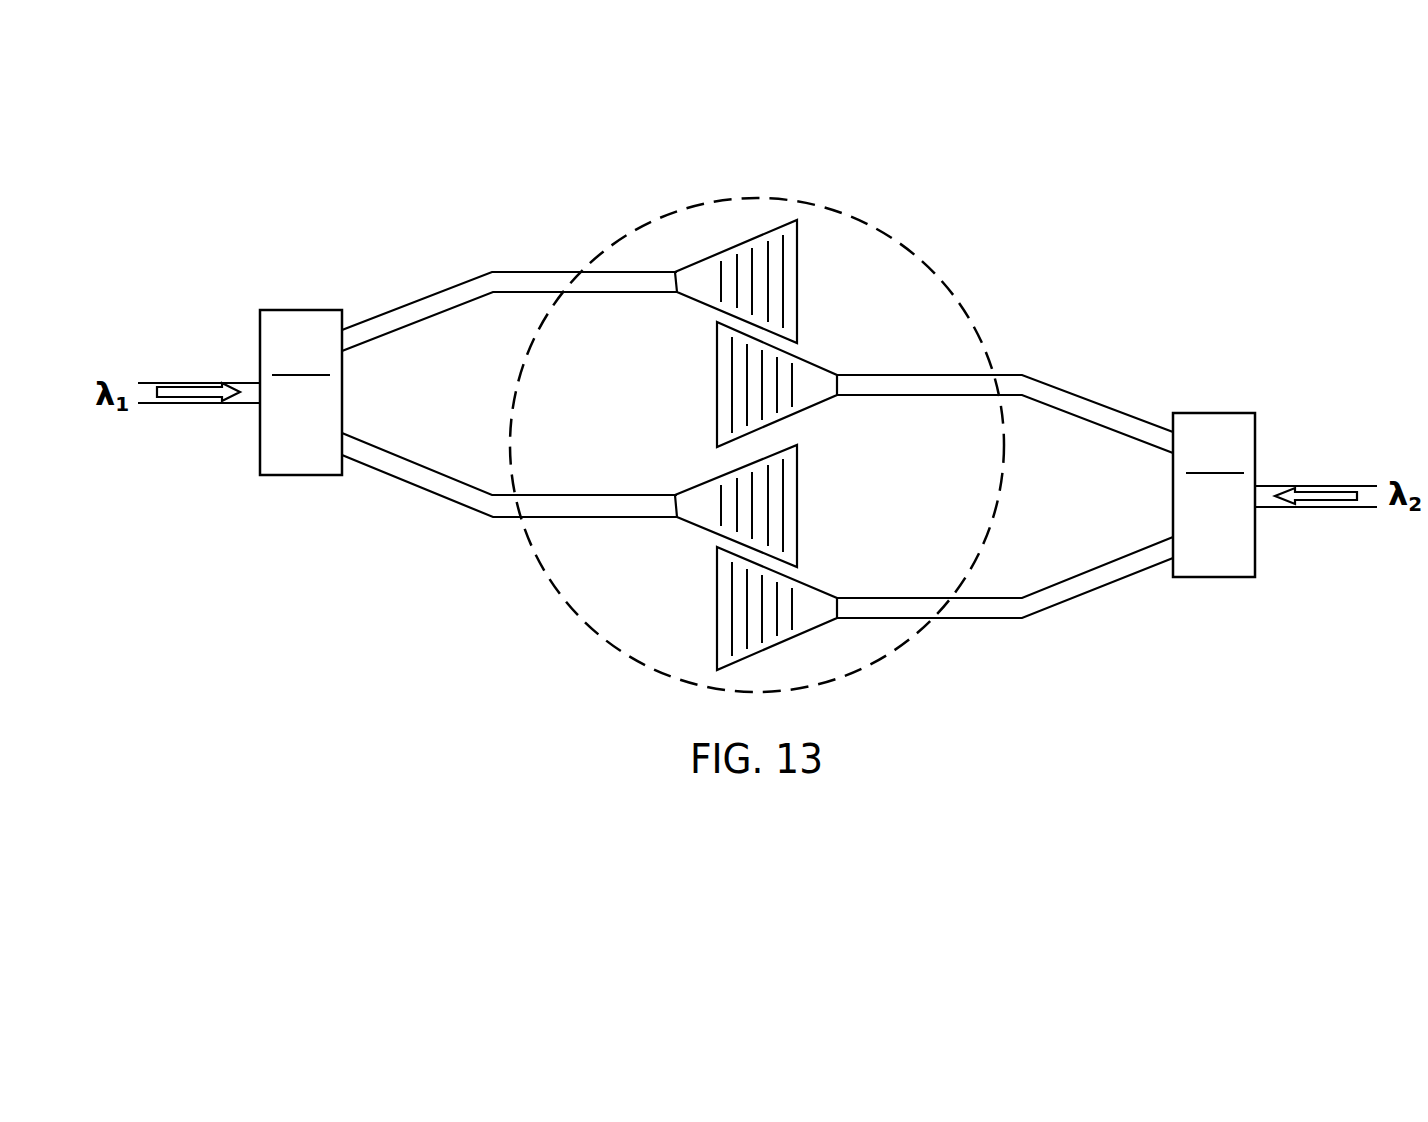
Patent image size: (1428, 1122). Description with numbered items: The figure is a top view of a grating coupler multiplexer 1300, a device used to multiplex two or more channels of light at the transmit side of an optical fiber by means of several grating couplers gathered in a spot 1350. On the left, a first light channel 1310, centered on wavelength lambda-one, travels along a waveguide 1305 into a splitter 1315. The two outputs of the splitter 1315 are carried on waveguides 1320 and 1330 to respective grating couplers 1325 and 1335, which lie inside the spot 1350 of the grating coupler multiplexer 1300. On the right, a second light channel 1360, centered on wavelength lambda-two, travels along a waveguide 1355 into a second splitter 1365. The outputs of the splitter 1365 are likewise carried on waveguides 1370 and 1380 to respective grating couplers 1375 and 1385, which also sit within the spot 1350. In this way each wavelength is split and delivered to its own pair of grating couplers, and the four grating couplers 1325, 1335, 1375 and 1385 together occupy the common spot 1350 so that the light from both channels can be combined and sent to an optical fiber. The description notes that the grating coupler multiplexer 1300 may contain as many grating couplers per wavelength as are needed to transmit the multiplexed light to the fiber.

The grating coupler multiplexer 1300 is at (446, 655).
The waveguide 1305 is at (142, 380).
The light channel 1310 is at (220, 390).
The splitter 1315 is at (301, 392).
The waveguide 1320 is at (410, 315).
The grating coupler 1325 is at (708, 257).
The waveguide 1330 is at (395, 465).
The grating coupler 1335 is at (695, 487).
The spot 1350 is at (542, 565).
The waveguide 1355 is at (1352, 487).
The light channel 1360 is at (1290, 498).
The splitter 1365 is at (1214, 495).
The waveguide 1370 is at (1093, 412).
The grating coupler 1375 is at (813, 362).
The waveguide 1380 is at (1108, 572).
The grating coupler 1385 is at (818, 590).